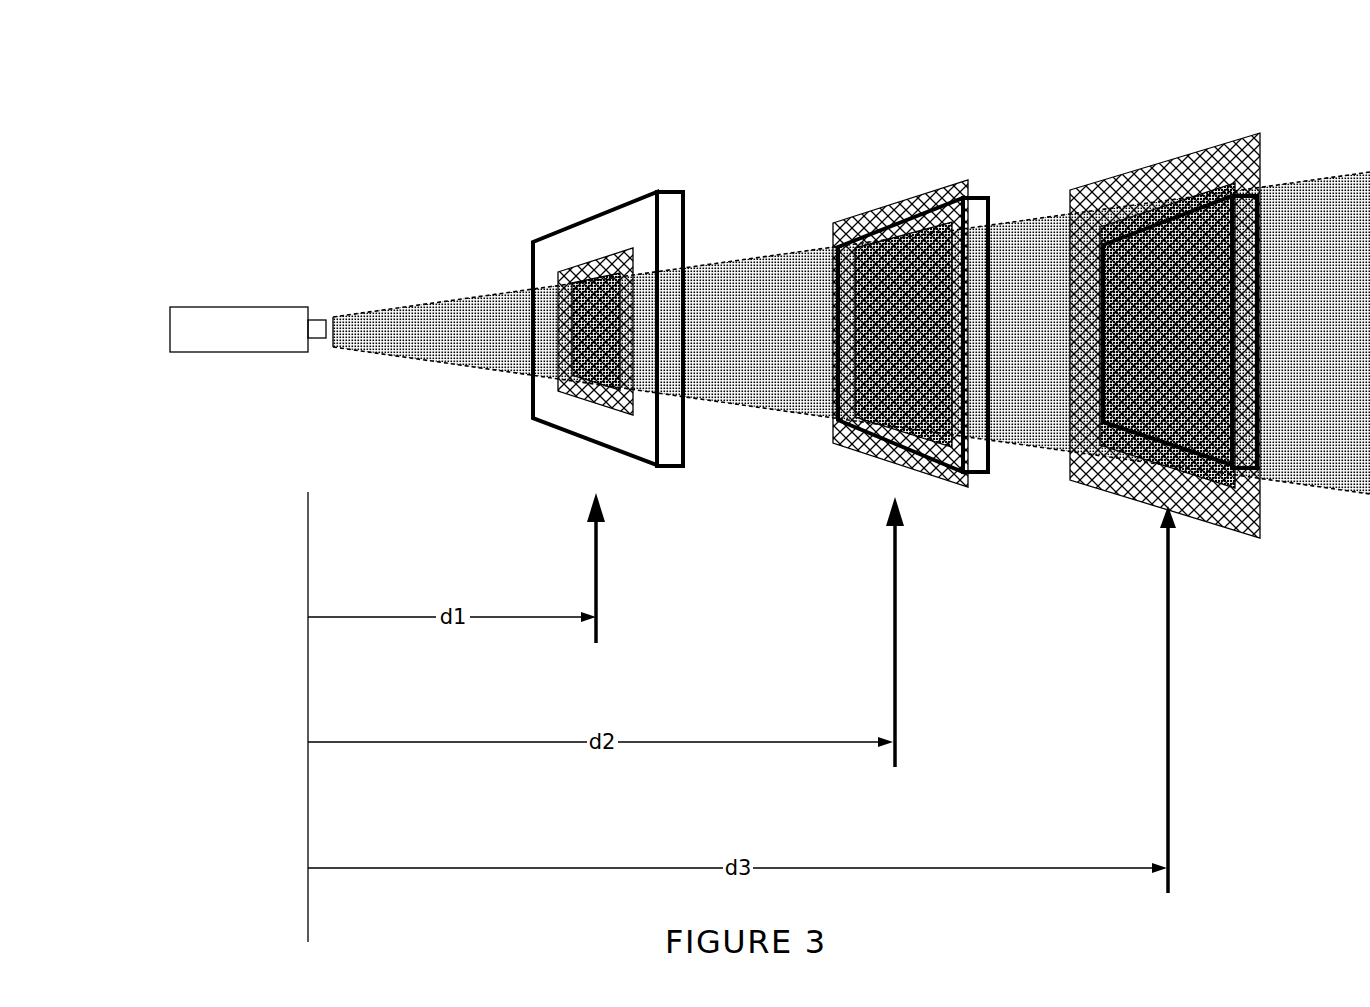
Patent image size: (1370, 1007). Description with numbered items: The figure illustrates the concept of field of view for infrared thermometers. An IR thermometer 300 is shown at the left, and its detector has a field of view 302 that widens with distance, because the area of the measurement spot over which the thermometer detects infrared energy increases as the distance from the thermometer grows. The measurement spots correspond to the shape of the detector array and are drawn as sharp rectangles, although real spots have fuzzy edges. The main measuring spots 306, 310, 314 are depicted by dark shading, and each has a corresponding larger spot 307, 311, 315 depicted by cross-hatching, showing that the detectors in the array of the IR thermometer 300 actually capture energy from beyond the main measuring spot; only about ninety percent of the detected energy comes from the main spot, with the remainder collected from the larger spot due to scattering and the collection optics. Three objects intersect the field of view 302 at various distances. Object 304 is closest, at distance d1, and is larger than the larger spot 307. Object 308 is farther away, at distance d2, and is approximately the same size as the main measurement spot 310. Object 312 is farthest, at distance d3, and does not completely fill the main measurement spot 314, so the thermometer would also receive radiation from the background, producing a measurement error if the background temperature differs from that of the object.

The IR thermometer 300 is at (237, 305).
The field of view 302 is at (455, 297).
The object 304 is at (685, 468).
The main measuring spot 306 is at (580, 272).
The larger spot 307 is at (633, 245).
The object 308 is at (990, 473).
The main measuring spot 310 is at (895, 225).
The larger spot 311 is at (948, 185).
The object 312 is at (1263, 483).
The main measuring spot 314 is at (1133, 178).
The larger spot 315 is at (1215, 150).